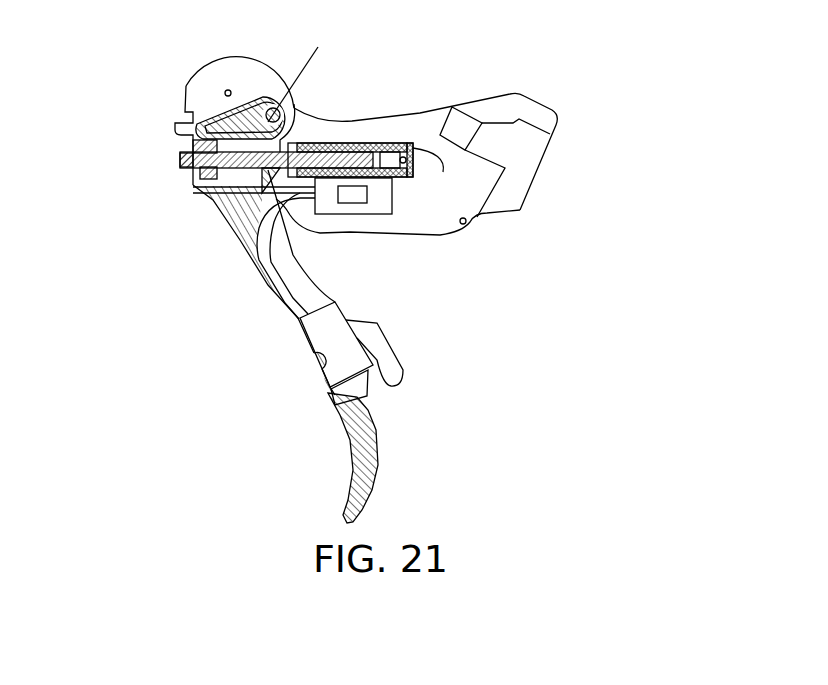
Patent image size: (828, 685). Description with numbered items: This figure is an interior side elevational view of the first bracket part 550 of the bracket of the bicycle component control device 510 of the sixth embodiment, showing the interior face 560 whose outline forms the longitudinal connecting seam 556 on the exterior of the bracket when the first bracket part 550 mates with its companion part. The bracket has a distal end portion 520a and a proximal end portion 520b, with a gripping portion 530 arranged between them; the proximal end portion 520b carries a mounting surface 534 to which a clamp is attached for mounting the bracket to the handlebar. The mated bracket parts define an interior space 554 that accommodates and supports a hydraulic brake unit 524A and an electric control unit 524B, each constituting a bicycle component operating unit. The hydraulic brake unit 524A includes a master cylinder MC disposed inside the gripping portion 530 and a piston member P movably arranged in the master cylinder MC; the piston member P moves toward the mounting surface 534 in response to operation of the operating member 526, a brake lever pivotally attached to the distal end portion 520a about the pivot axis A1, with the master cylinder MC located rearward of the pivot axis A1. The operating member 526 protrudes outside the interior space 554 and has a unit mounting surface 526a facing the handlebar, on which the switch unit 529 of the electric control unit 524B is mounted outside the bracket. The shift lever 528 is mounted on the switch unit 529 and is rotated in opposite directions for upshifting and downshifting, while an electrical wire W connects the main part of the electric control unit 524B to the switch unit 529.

The bicycle component control device 510 is at (170, 46).
The distal end portion 520a is at (207, 82).
The proximal end portion 520b is at (543, 148).
The interior face 560 is at (235, 75).
The first bracket part 550 is at (288, 68).
The pivot axis A1 is at (310, 71).
The longitudinal connecting seam 556 is at (297, 102).
The piston member P is at (339, 141).
The hydraulic brake unit 524A is at (382, 134).
The master cylinder MC is at (436, 176).
The mounting surface 534 is at (510, 185).
The gripping portion 530 is at (427, 214).
The interior space 554 is at (323, 229).
The electric control unit 524B is at (378, 226).
The electrical wire W is at (262, 250).
The operating member 526 is at (349, 438).
The unit mounting surface 526a is at (318, 371).
The switch unit 529 is at (327, 328).
The shift lever 528 is at (398, 326).